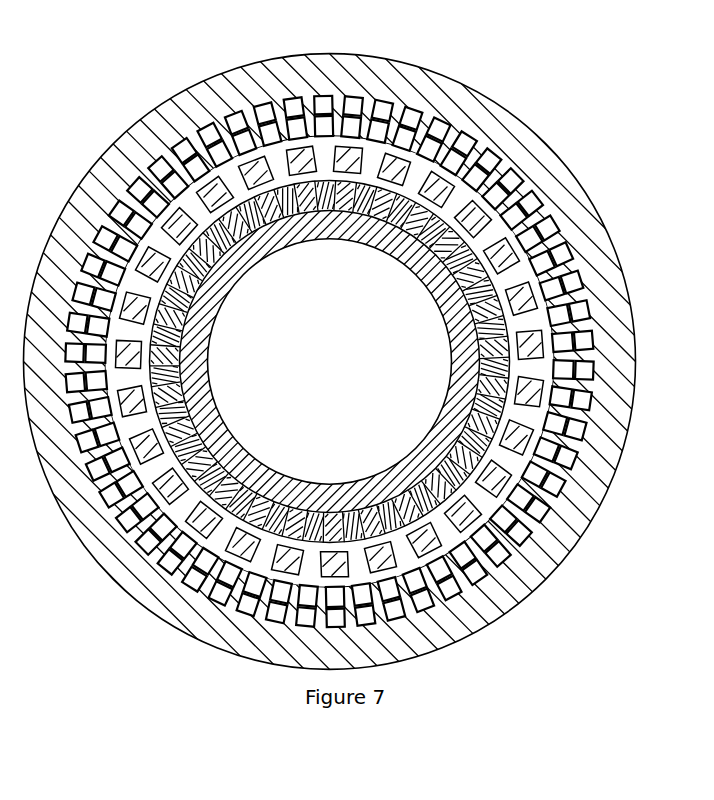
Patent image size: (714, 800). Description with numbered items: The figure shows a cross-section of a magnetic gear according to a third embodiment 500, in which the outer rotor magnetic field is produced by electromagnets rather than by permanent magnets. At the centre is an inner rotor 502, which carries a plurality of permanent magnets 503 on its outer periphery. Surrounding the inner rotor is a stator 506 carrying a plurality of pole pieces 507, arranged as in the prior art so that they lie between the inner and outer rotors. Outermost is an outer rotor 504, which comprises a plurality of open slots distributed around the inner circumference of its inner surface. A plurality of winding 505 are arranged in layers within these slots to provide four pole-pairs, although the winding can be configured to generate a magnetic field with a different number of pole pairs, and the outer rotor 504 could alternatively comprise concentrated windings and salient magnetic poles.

The third embodiment 500 is at (530, 588).
The inner rotor 502 is at (283, 248).
The permanent magnets 503 is at (405, 224).
The outer rotor 504 is at (432, 100).
The winding 505 is at (352, 104).
The stator 506 is at (484, 228).
The pole pieces 507 is at (497, 252).